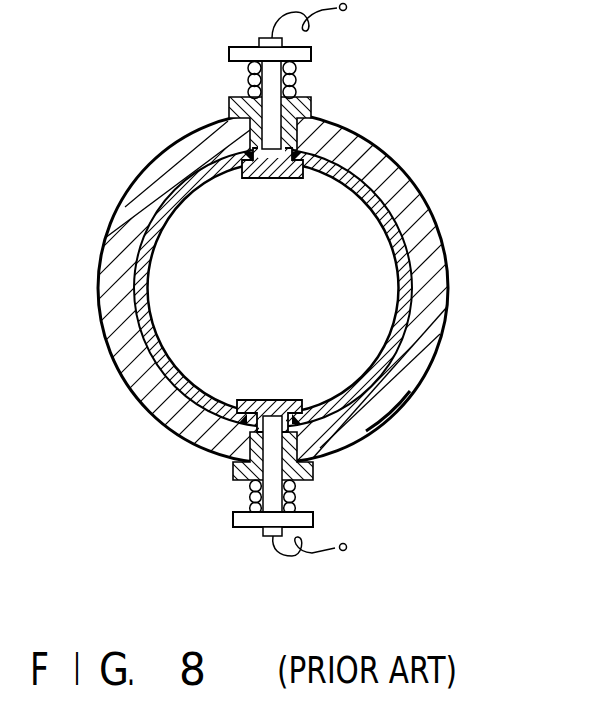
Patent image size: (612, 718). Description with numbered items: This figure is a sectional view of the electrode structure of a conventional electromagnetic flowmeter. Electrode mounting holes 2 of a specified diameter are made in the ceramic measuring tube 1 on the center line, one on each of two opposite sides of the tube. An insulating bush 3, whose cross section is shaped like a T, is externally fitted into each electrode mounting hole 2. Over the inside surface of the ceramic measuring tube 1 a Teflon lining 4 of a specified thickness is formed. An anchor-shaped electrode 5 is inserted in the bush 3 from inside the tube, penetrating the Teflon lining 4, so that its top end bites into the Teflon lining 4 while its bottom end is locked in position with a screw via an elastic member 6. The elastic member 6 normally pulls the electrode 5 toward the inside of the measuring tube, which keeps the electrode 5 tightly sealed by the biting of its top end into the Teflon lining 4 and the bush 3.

The ceramic measuring tube 1 is at (306, 325).
The electrode mounting hole 2 is at (233, 463).
The insulating bush 3 is at (300, 130).
The Teflon lining 4 is at (149, 310).
The anchor-shaped electrode 5 is at (278, 179).
The elastic member 6 is at (297, 71).